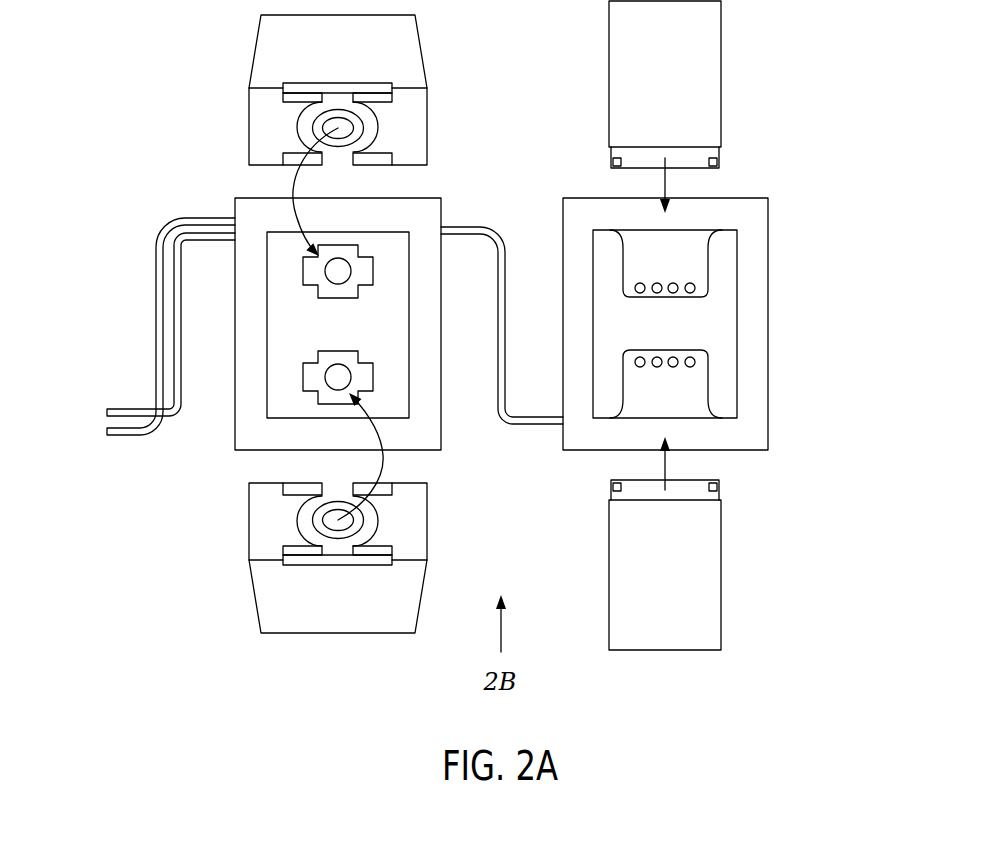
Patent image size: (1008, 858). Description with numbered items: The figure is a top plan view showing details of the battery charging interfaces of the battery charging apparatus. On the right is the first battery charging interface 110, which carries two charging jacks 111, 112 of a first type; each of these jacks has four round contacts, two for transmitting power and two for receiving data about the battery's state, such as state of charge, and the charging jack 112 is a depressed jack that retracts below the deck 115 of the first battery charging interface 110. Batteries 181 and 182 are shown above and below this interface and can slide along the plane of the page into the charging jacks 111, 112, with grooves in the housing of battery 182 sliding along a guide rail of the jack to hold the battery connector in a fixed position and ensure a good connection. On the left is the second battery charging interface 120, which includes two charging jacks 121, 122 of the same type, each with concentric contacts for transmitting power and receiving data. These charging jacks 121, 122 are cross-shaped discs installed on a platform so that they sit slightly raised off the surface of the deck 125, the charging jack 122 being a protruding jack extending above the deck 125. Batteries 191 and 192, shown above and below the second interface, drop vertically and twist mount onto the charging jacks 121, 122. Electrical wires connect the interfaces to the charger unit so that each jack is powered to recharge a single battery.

The first battery charging interface 110 is at (722, 328).
The charging jack 111 is at (685, 275).
The charging jack 112 is at (692, 402).
The deck 115 is at (693, 335).
The second battery charging interface 120 is at (284, 402).
The charging jack 121 is at (360, 265).
The charging jack 122 is at (362, 377).
The deck 125 is at (387, 325).
The battery 181 is at (645, 70).
The battery 182 is at (645, 611).
The battery 191 is at (318, 59).
The battery 192 is at (318, 611).